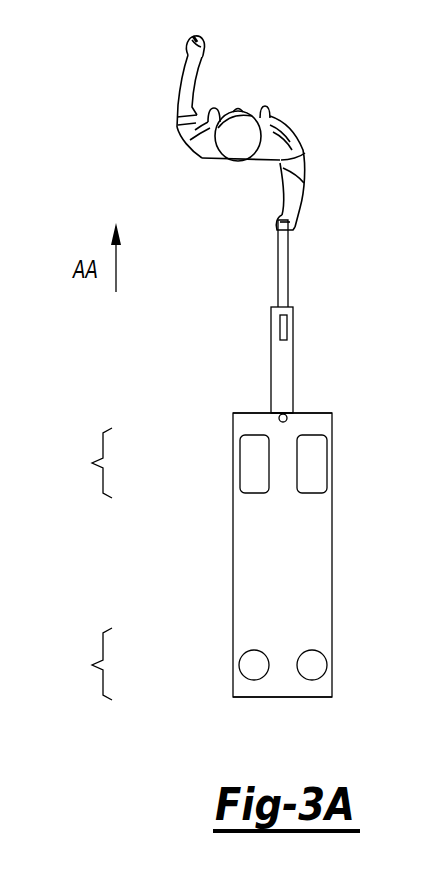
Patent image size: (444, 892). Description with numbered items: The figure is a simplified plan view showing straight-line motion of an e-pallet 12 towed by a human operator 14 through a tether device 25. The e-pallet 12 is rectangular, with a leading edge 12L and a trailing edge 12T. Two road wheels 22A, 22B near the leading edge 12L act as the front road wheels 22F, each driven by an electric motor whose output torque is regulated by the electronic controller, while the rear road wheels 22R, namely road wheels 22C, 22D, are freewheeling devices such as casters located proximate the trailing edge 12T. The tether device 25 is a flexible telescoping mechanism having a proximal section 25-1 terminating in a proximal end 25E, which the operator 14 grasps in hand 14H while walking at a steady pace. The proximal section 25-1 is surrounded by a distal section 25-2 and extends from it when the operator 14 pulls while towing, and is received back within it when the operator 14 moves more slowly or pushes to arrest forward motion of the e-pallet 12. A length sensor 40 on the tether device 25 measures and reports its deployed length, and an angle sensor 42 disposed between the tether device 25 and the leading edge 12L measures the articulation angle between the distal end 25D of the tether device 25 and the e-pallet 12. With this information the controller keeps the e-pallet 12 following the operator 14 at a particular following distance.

The e-pallet 12 is at (237, 554).
The leading edge 12L is at (255, 413).
The trailing edge 12T is at (282, 697).
The human operator 14 is at (215, 133).
The hand 14H is at (283, 220).
The road wheel 22A is at (240, 467).
The road wheel 22B is at (327, 465).
The road wheel 22C is at (239, 665).
The road wheel 22D is at (327, 665).
The front road wheels 22F is at (82, 463).
The rear road wheels 22R is at (82, 664).
The tether device 25 is at (275, 288).
The proximal section 25-1 is at (289, 262).
The distal section 25-2 is at (294, 375).
The distal end 25D is at (320, 400).
The proximal end 25E is at (310, 223).
The length sensor 40 is at (284, 328).
The angle sensor 42 is at (279, 419).